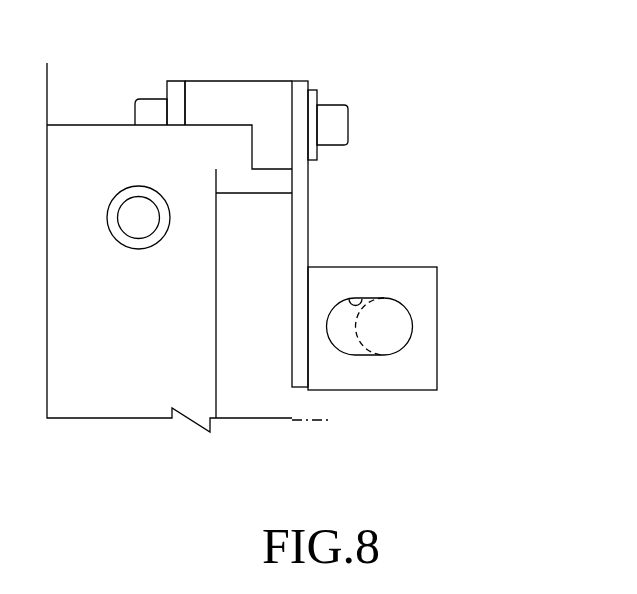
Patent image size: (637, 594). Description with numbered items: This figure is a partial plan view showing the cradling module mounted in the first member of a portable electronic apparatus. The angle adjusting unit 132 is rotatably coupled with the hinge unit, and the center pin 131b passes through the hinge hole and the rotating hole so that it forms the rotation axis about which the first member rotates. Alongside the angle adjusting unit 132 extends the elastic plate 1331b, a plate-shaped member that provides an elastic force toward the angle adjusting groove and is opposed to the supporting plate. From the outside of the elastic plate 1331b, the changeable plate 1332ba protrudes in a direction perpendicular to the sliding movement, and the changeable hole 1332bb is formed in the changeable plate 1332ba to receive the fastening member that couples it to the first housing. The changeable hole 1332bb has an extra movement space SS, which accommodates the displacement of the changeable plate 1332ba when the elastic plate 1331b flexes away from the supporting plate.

The angle adjusting unit 132 is at (231, 95).
The center pin 131b is at (342, 128).
The elastic plate 1331b is at (303, 188).
The changeable plate 1332ba is at (420, 328).
The changeable hole 1332bb is at (362, 302).
The extra movement space SS is at (353, 342).